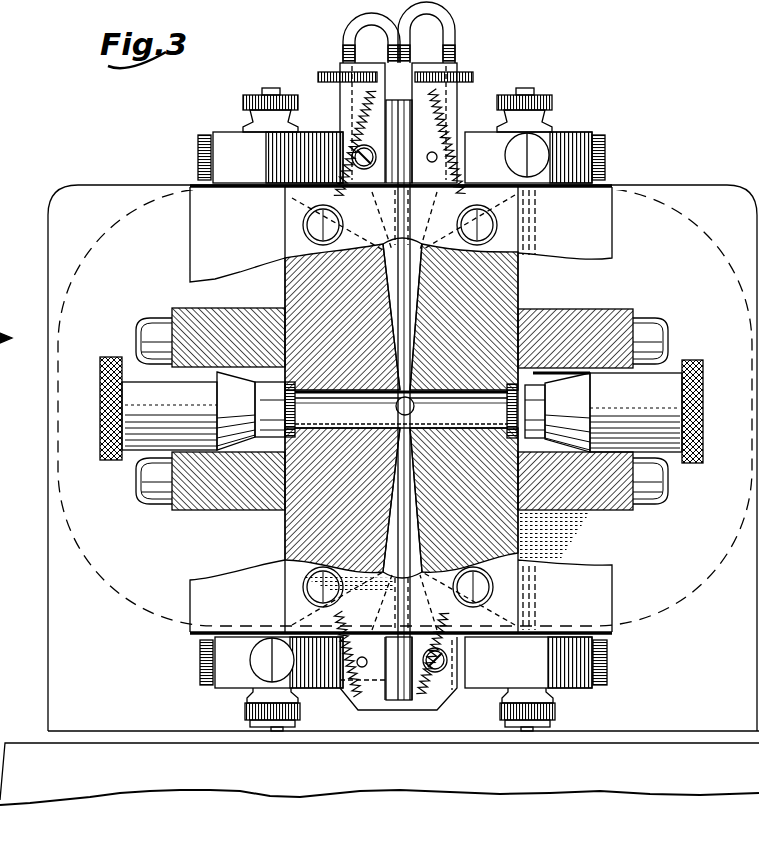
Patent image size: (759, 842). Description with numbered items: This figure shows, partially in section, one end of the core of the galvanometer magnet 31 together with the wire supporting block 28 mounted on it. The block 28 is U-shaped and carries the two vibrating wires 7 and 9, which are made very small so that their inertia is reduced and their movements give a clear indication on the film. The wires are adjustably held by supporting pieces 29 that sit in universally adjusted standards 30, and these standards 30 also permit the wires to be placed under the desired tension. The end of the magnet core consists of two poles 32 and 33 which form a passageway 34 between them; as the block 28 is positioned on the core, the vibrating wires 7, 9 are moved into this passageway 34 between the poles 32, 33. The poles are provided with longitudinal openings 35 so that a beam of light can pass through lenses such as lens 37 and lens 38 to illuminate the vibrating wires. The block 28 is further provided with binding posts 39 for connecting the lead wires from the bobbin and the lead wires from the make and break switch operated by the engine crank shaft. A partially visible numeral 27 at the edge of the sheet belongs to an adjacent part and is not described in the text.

The vibrating wire 7 is at (425, 252).
The vibrating wire 9 is at (384, 248).
The adjacent part 27 is at (8, 322).
The block 28 is at (592, 594).
The supporting pieces 29 is at (405, 718).
The standards 30 is at (229, 135).
The magnet 31 is at (722, 249).
The pole 32 is at (293, 283).
The pole 33 is at (492, 289).
The passageway 34 is at (406, 582).
The longitudinal openings 35 is at (402, 412).
The lens 37 is at (658, 380).
The lens 38 is at (130, 368).
The binding posts 39 is at (492, 230).